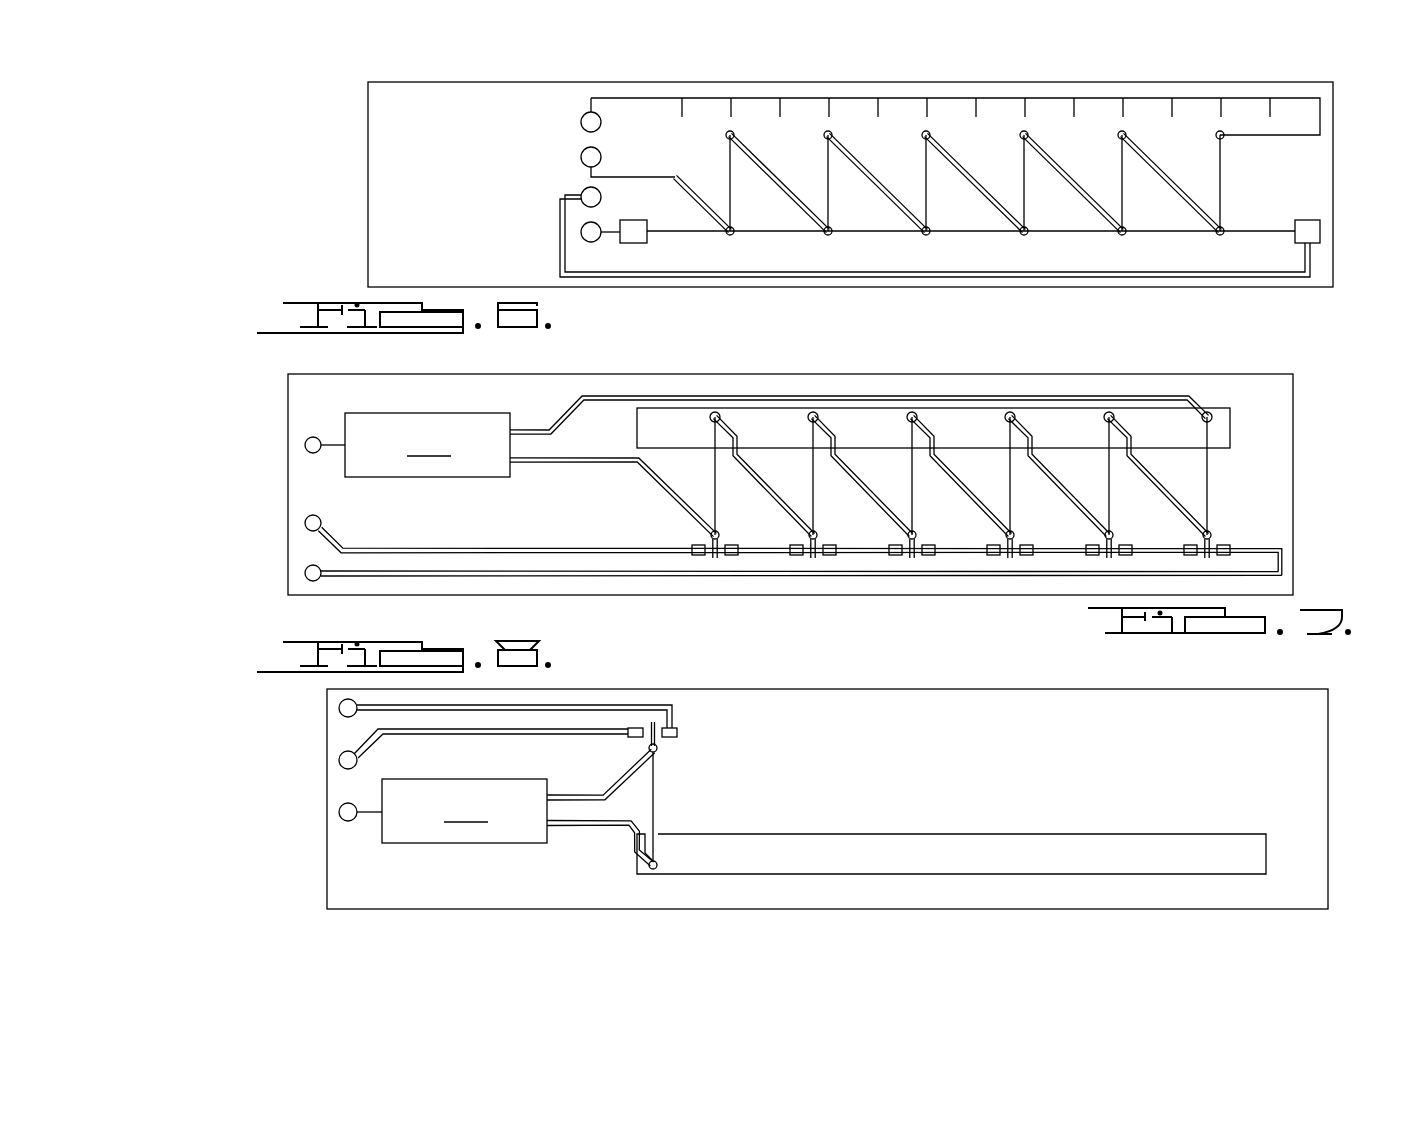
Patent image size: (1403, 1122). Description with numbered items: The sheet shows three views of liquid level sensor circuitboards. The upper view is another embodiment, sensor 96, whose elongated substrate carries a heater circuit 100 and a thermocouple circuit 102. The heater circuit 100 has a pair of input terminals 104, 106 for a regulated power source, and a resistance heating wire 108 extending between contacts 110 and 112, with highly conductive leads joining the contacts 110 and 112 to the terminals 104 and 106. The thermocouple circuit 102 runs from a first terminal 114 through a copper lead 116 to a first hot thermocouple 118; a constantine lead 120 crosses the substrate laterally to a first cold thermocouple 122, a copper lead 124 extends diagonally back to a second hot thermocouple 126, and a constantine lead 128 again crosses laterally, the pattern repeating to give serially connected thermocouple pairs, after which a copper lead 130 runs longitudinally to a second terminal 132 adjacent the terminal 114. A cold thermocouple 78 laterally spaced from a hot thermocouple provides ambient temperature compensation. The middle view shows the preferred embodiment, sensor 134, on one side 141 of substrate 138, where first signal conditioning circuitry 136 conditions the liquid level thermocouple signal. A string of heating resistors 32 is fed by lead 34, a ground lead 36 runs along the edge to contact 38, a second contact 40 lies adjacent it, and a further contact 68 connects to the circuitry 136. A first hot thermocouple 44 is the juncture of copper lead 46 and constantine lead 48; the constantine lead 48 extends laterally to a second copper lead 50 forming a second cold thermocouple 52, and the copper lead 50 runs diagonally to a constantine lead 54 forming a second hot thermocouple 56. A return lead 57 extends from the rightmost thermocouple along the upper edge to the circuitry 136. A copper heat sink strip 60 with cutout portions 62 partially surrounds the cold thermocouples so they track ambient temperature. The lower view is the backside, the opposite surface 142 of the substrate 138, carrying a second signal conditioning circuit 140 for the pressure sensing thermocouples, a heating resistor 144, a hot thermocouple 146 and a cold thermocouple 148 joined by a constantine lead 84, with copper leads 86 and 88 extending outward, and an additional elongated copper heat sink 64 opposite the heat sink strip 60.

In FIG. 6, the cold thermocouple 78 is at (1333, 172).
In FIG. 6, the sensor 96 is at (1280, 298).
In FIG. 6, the heater circuit 100 is at (540, 215).
In FIG. 6, the thermocouple circuit 102 is at (556, 131).
In FIG. 6, the input terminal 104 is at (581, 233).
In FIG. 6, the input terminal 106 is at (582, 193).
In FIG. 6, the resistance heating wire 108 is at (912, 233).
In FIG. 6, the contact 110 is at (638, 243).
In FIG. 6, the contact 112 is at (1295, 237).
In FIG. 6, the first terminal 114 is at (581, 157).
In FIG. 6, the copper lead 116 is at (640, 177).
In FIG. 6, the first hot thermocouple 118 is at (730, 236).
In FIG. 6, the constantine lead 120 is at (730, 190).
In FIG. 6, the first cold thermocouple 122 is at (726, 135).
In FIG. 6, the copper lead 124 is at (770, 175).
In FIG. 6, the second hot thermocouple 126 is at (828, 236).
In FIG. 6, the constantine lead 128 is at (828, 190).
In FIG. 6, the copper lead 130 is at (1100, 98).
In FIG. 6, the second terminal 132 is at (581, 122).
In FIG. 7, the circuitboard 134 is at (1306, 445).
In FIG. 8, the circuitboard 134 is at (1239, 682).
In FIG. 7, the first signal conditioning circuitry 136 is at (427, 445).
In FIG. 7, the substrate 138 is at (1293, 390).
In FIG. 8, the substrate 138 is at (1296, 700).
In FIG. 7, the side of substrate 141 is at (1270, 487).
In FIG. 7, the contact pad 68 is at (306, 440).
In FIG. 7, the second contact 40 is at (305, 523).
In FIG. 8, the second contact 40 is at (338, 761).
In FIG. 7, the contact 38 is at (305, 575).
In FIG. 8, the contact 38 is at (338, 709).
In FIG. 7, the return lead 57 is at (575, 405).
In FIG. 7, the copper lead 46 is at (577, 462).
In FIG. 7, the copper heat sink strip 60 is at (960, 415).
In FIG. 7, the second cold thermocouple 52 is at (810, 412).
In FIG. 7, the constantine lead 48 is at (713, 478).
In FIG. 7, the second copper lead 50 is at (778, 502).
In FIG. 7, the first hot thermocouple 44 is at (718, 533).
In FIG. 7, the constantine lead 54 is at (814, 521).
In FIG. 7, the second hot thermocouple 56 is at (818, 537).
In FIG. 7, the cutout portions 62 is at (1028, 446).
In FIG. 7, the lead 34 is at (512, 548).
In FIG. 7, the ground lead 36 is at (437, 570).
In FIG. 7, the heating resistors 32 is at (795, 556).
In FIG. 8, the second signal conditioning circuit 140 is at (464, 811).
In FIG. 8, the opposite surface 142 is at (1303, 786).
In FIG. 8, the heating resistor 144 is at (677, 732).
In FIG. 8, the hot thermocouple 146 is at (657, 748).
In FIG. 8, the constantine lead 84 is at (657, 795).
In FIG. 8, the copper lead 86 is at (565, 828).
In FIG. 8, the copper lead 88 is at (570, 795).
In FIG. 8, the cold thermocouple 148 is at (660, 865).
In FIG. 8, the copper heat sink 64 is at (820, 845).